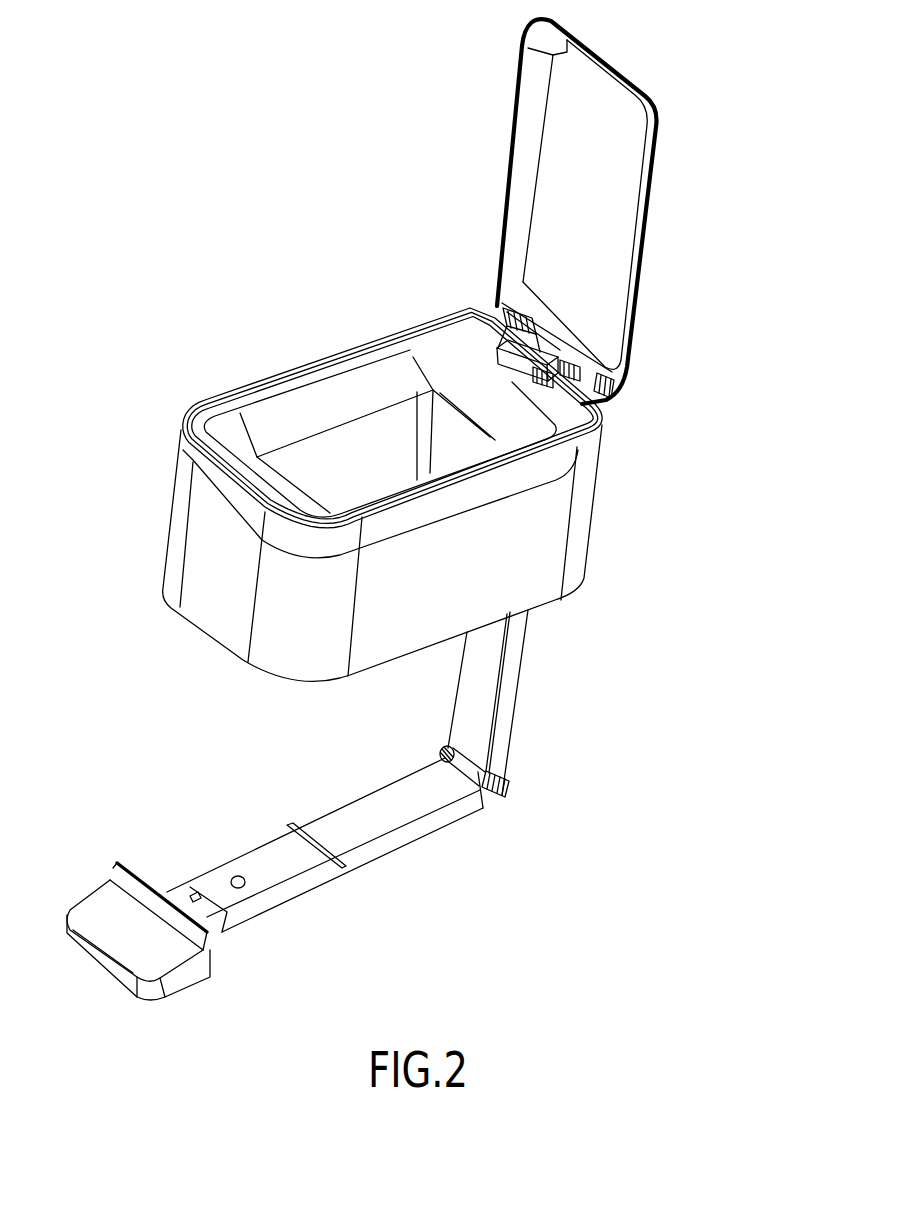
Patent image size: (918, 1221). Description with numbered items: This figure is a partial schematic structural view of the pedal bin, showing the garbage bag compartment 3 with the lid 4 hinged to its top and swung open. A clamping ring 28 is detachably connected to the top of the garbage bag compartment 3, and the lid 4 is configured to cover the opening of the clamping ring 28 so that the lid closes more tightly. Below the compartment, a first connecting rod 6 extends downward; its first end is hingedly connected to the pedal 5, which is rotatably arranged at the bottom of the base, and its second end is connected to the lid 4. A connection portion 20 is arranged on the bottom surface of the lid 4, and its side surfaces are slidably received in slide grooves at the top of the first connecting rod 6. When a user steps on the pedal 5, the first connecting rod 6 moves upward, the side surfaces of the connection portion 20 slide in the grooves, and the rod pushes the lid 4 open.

The garbage bag compartment 3 is at (580, 572).
The lid 4 is at (653, 223).
The pedal 5 is at (250, 860).
The first connecting rod 6 is at (505, 735).
The connection portion 20 is at (510, 327).
The clamping ring 28 is at (587, 457).